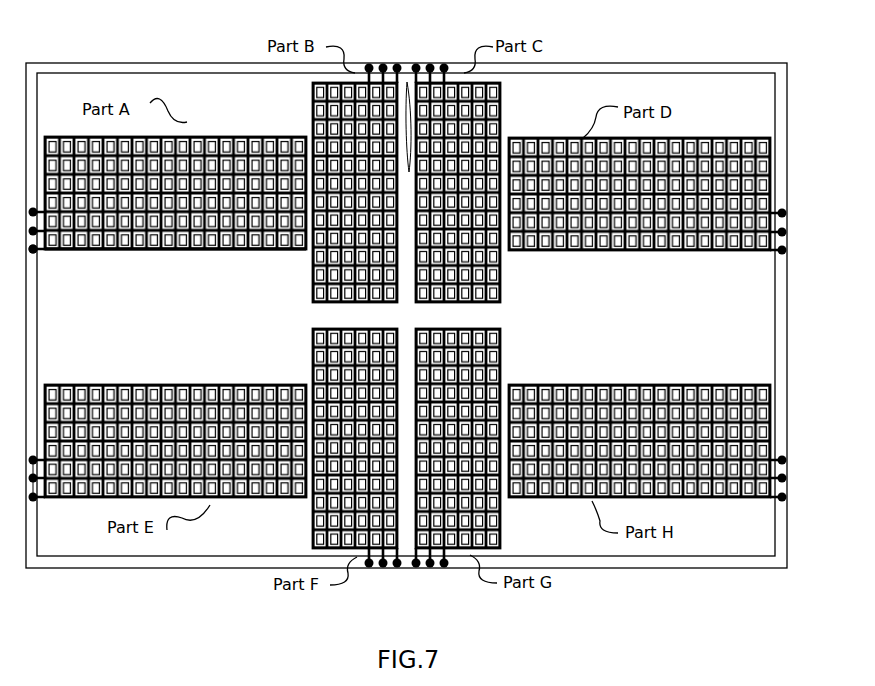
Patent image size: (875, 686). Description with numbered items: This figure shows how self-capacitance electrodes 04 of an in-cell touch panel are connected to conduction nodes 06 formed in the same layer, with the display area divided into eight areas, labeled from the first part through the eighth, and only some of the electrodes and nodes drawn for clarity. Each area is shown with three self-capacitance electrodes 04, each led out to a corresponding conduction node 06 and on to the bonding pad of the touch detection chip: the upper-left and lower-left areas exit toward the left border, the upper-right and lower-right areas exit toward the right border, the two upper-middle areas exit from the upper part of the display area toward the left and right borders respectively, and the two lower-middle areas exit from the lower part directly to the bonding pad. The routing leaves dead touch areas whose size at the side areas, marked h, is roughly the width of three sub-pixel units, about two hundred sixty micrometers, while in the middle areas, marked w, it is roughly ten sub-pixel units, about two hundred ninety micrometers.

The conduction node 06 is at (36, 254).
The self-capacitance electrode 04 is at (278, 250).
The dead touch area width in middle areas w is at (406, 178).
The dead touch area width in side areas h is at (34, 452).